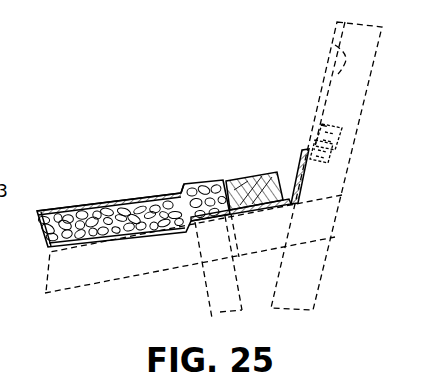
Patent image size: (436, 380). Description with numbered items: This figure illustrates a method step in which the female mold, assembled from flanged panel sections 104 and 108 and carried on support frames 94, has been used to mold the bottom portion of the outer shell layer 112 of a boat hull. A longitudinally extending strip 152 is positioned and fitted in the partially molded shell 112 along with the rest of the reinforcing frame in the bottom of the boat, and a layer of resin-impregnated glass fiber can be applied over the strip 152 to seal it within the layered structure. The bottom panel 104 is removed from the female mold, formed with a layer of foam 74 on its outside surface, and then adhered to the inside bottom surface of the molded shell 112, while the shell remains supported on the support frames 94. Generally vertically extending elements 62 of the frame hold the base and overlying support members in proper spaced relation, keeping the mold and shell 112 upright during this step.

The layer of foam 74 is at (139, 197).
The flanged panel section 104 is at (76, 209).
The longitudinally extending strip 152 is at (226, 178).
The outer shell layer 112 is at (300, 165).
The flanged panel section 108 is at (273, 215).
The support frame 94 is at (338, 114).
The vertically extending element 62 is at (225, 281).